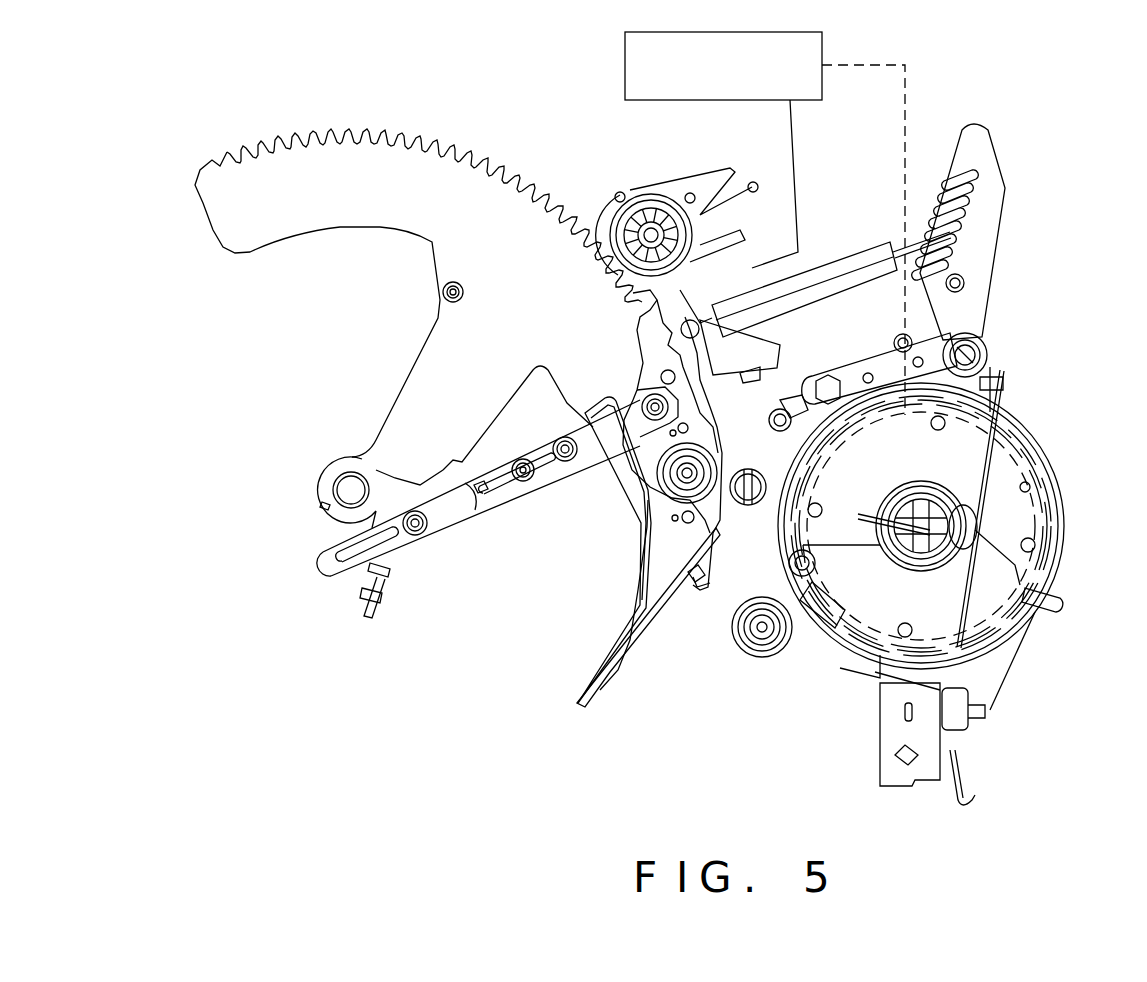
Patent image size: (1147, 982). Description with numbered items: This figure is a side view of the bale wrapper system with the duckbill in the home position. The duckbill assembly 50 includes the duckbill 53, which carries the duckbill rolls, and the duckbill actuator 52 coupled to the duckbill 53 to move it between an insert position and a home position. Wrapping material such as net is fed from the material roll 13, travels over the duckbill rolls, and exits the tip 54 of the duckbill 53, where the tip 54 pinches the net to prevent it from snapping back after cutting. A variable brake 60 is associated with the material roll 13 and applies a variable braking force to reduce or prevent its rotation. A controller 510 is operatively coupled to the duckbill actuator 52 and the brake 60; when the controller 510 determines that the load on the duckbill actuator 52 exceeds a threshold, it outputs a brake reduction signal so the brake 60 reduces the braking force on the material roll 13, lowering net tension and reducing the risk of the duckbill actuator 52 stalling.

The controller 510 is at (765, 223).
The duckbill assembly 50 is at (395, 311).
The duckbill actuator 52 is at (735, 270).
The duckbill 53 is at (642, 628).
The tip 54 is at (585, 702).
The variable brake 60 is at (1013, 472).
The material roll 13 is at (1013, 527).